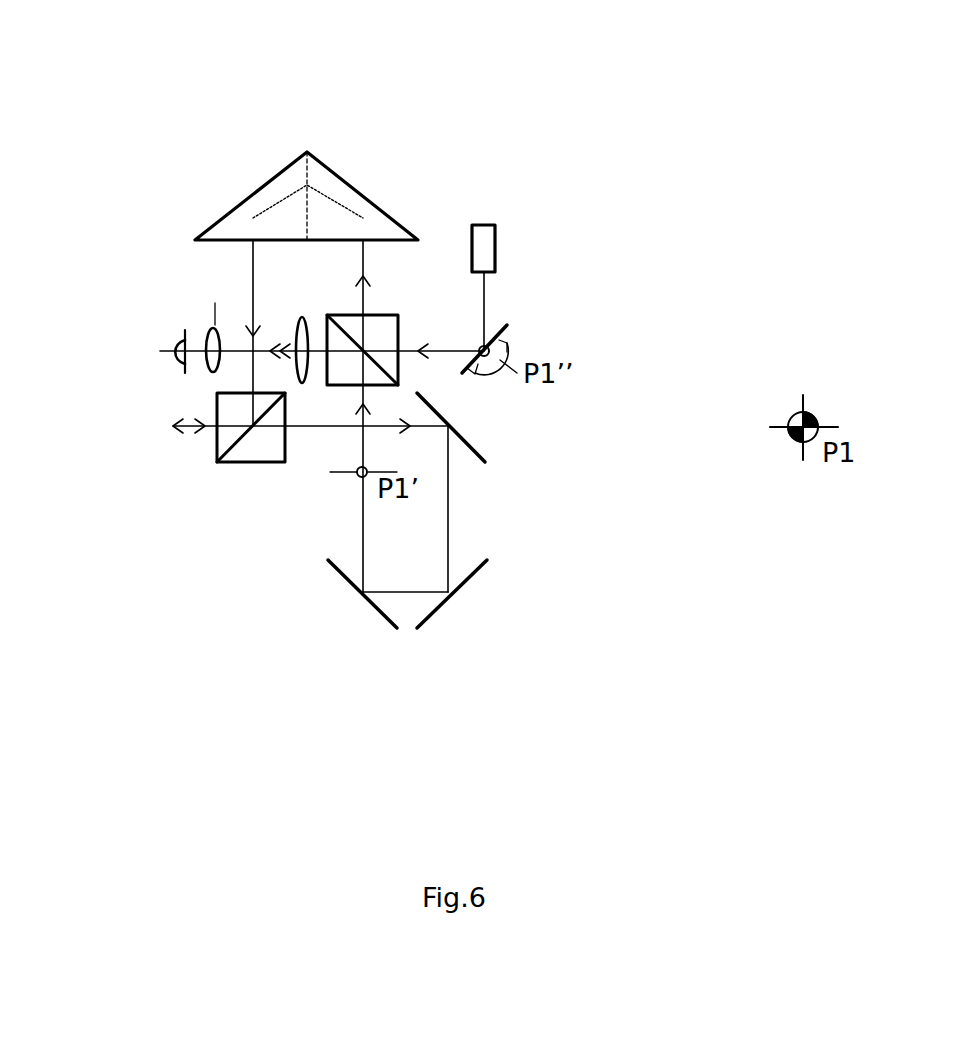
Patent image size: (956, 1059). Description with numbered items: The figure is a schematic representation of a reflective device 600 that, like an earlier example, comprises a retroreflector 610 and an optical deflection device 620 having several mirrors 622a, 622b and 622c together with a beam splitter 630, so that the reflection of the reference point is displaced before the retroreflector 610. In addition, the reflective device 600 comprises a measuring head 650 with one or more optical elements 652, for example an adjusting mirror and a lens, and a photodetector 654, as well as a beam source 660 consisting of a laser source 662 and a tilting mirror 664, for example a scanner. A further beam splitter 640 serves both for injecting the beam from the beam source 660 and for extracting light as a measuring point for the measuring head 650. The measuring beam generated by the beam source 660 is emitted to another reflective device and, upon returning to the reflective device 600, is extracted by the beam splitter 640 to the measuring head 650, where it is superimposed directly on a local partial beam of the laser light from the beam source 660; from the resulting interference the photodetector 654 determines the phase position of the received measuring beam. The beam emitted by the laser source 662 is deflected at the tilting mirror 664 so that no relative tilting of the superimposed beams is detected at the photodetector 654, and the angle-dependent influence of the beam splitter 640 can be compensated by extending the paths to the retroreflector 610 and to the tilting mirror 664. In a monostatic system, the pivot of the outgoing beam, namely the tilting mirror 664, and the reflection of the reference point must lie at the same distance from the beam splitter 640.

The reflective device 600 is at (348, 108).
The retroreflector 610 is at (355, 190).
The optical deflection device 620 is at (225, 535).
The mirror 622a is at (470, 443).
The mirror 622b is at (472, 573).
The mirror 622c is at (348, 580).
The beam splitter 630 is at (217, 462).
The beam splitter 640 is at (388, 315).
The measuring head 650 is at (177, 308).
The optical elements 652 is at (300, 320).
The photodetector 654 is at (172, 352).
The beam source 660 is at (538, 263).
The laser source 662 is at (497, 225).
The tilting mirror 664 is at (556, 341).